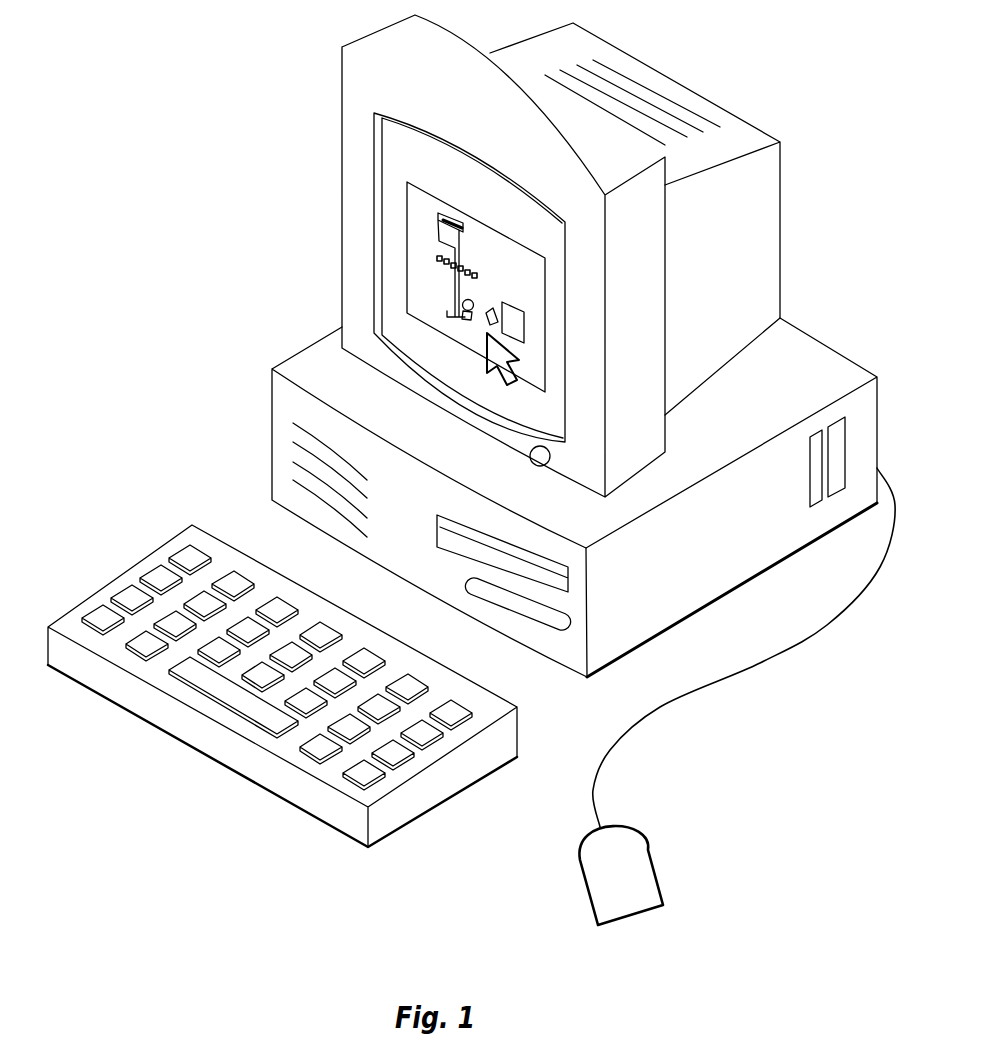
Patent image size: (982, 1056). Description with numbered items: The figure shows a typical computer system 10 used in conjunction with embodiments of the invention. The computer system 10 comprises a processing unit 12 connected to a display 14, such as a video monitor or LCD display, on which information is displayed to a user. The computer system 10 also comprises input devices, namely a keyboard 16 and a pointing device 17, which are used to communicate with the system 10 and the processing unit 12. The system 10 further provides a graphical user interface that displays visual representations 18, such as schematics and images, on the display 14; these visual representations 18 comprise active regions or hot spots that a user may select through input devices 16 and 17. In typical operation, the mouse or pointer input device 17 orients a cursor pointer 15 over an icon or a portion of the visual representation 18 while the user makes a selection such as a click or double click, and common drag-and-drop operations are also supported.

The computer system 10 is at (493, 848).
The processing unit 12 is at (272, 445).
The display 14 is at (358, 183).
The cursor pointer 15 is at (510, 343).
The keyboard 16 is at (192, 558).
The pointing device 17 is at (633, 902).
The visual representations 18 is at (497, 255).